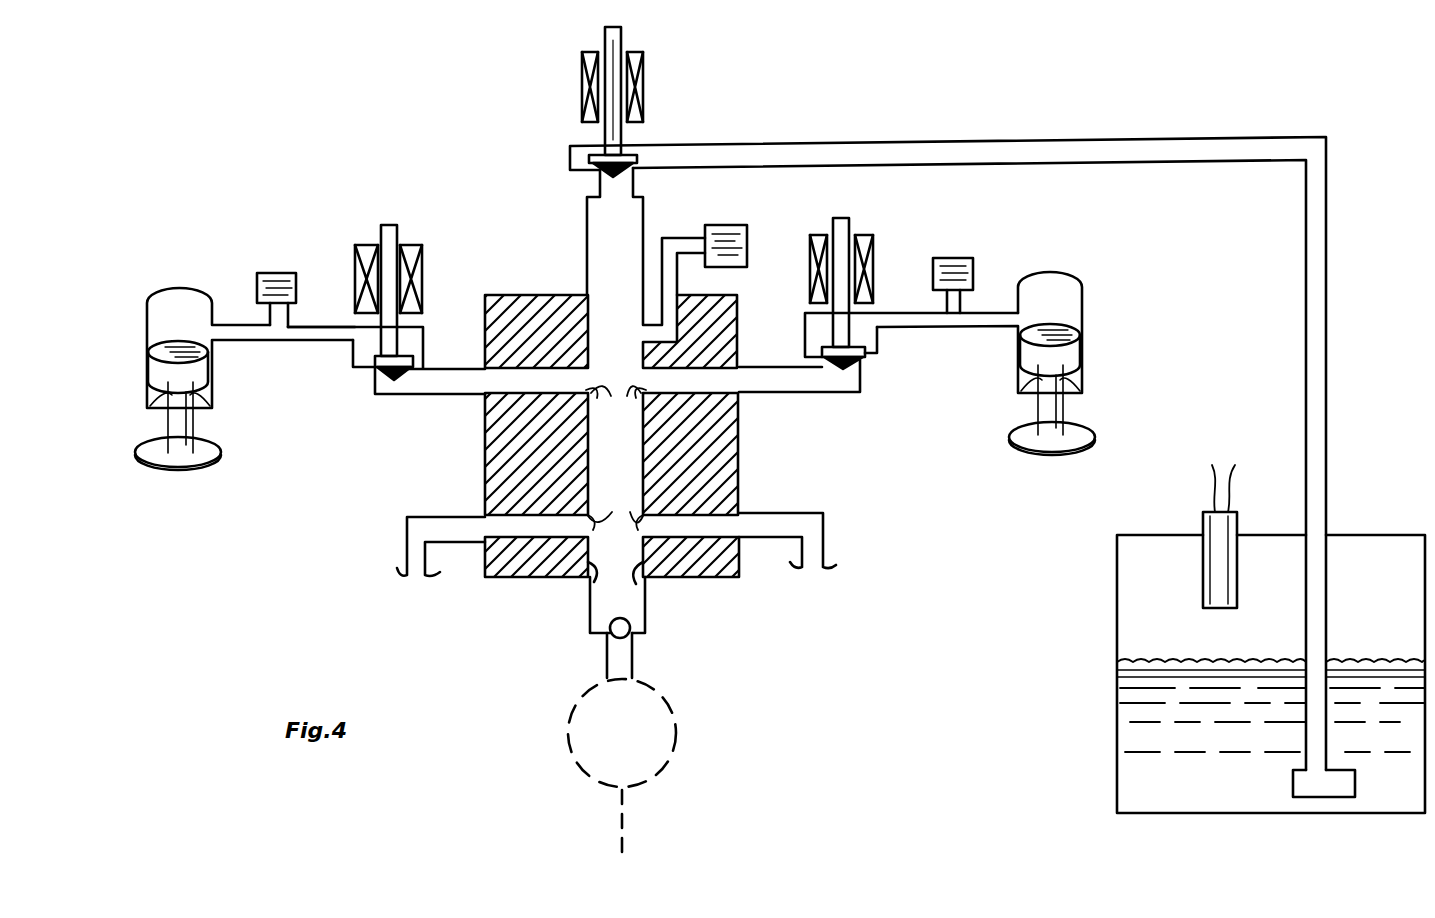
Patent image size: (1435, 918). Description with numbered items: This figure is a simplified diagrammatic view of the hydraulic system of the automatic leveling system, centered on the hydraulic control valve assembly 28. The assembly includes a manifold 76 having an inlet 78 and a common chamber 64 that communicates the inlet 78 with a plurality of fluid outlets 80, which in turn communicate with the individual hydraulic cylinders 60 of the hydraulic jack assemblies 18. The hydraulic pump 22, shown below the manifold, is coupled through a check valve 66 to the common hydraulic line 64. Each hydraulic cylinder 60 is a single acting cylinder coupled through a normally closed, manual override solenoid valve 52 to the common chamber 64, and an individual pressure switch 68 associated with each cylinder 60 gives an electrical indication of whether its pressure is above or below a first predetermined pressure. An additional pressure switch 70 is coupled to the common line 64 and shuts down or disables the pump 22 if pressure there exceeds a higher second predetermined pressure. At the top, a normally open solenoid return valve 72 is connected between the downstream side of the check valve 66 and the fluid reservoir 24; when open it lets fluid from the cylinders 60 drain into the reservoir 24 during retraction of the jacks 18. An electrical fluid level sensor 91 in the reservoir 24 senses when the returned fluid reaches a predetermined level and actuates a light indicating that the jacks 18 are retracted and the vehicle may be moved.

The hydraulic jack assembly 18 is at (138, 359).
The hydraulic pump 22 is at (657, 705).
The fluid reservoir 24 is at (1130, 718).
The hydraulic control valve assembly 28 is at (478, 442).
The solenoid valve 52 is at (423, 256).
The hydraulic cylinder 60 is at (147, 307).
The common hydraulic line 64 is at (590, 583).
The check valve 66 is at (630, 628).
The pressure switch 68 is at (284, 273).
The pressure switch 70 is at (734, 225).
The solenoid return valve 72 is at (645, 91).
The manifold 76 is at (742, 578).
The inlet 78 is at (648, 593).
The fluid outlet 80 is at (616, 458).
The fluid level sensor 91 is at (1205, 518).